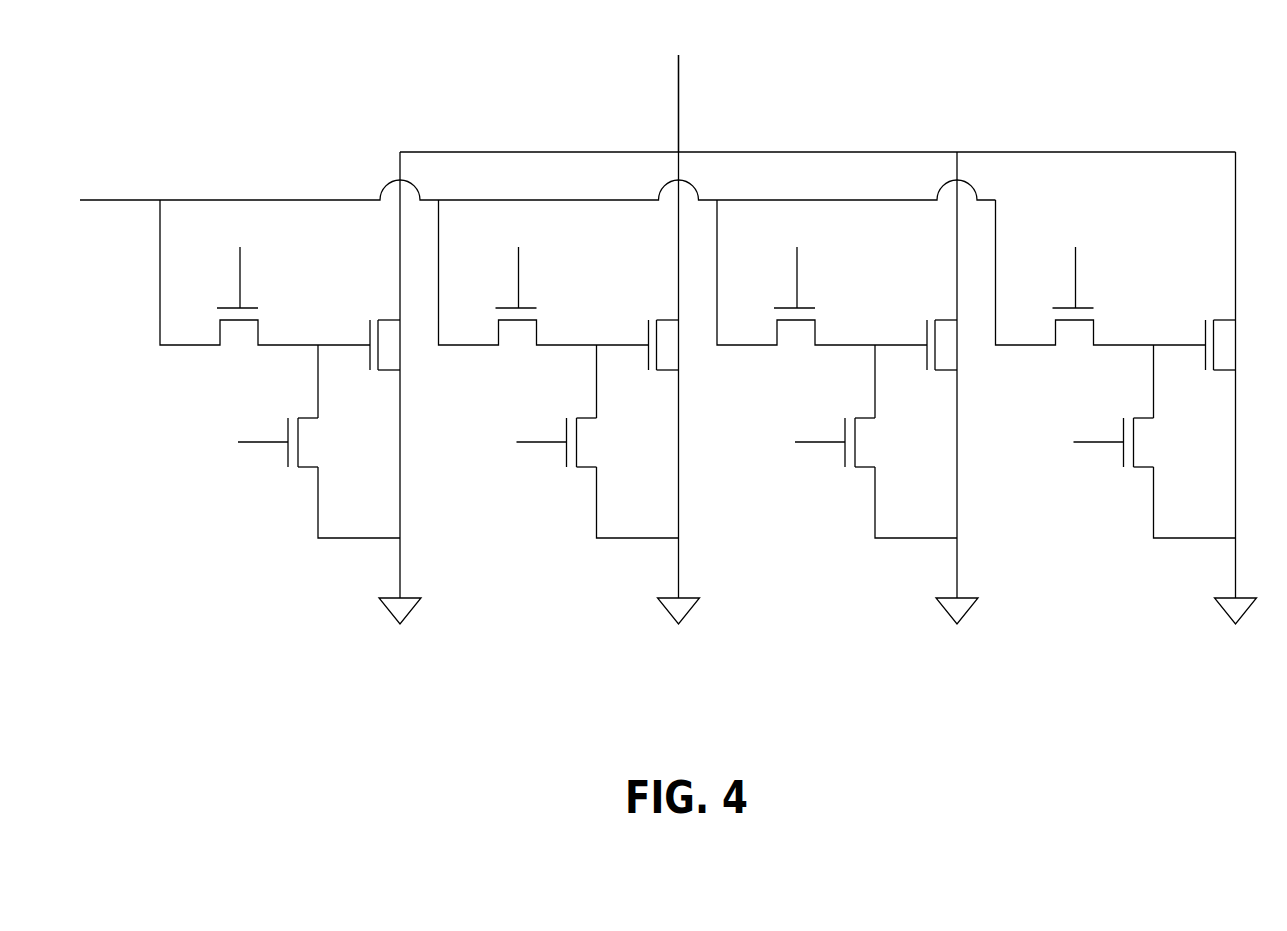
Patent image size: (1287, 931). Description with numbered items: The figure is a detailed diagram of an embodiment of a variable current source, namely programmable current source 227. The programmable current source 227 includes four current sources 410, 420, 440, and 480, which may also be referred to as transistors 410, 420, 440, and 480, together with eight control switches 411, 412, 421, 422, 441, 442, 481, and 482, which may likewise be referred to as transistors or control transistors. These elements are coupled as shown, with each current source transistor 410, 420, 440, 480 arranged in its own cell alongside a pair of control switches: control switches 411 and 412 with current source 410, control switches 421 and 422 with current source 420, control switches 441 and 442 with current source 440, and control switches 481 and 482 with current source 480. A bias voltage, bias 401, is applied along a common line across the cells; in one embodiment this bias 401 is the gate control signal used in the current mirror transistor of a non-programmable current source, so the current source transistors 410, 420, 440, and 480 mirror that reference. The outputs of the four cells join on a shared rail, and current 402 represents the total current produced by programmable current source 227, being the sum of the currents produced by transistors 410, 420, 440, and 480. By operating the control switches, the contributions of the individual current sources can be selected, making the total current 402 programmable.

The programmable current source 227 is at (640, 372).
The bias 401 is at (509, 201).
The current 402 is at (818, 90).
The current source 410 is at (370, 320).
The control switch 411 is at (217, 308).
The control switch 412 is at (288, 470).
The current source 420 is at (648, 320).
The control switch 421 is at (496, 308).
The control switch 422 is at (566, 470).
The current source 440 is at (927, 320).
The control switch 441 is at (774, 308).
The control switch 442 is at (845, 470).
The current source 480 is at (1206, 320).
The control switch 481 is at (1052, 308).
The control switch 482 is at (1124, 470).